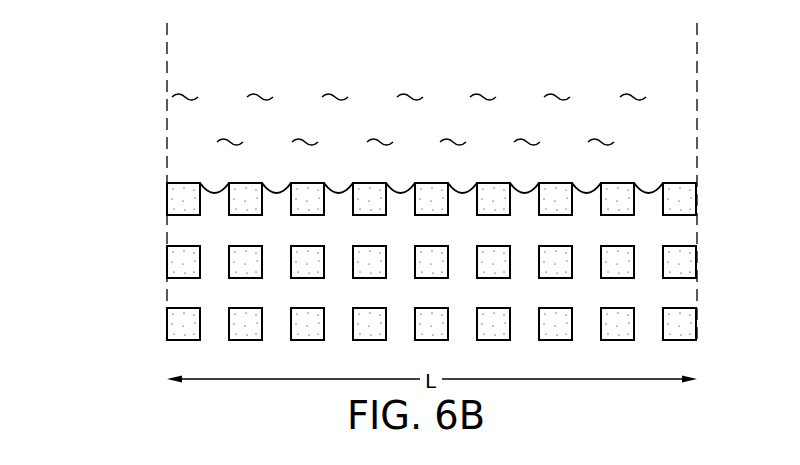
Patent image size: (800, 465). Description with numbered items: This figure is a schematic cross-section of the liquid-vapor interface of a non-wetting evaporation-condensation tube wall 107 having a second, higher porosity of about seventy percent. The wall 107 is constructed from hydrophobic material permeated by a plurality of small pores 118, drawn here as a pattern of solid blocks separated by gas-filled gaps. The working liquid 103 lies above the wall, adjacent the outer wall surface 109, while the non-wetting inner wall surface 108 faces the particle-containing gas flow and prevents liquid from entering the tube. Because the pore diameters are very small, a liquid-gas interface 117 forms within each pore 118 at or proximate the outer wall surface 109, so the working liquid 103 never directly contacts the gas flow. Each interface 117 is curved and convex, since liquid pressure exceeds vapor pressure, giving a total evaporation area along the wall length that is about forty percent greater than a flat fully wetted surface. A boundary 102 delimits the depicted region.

The channel wall 102 is at (690, 97).
The working liquid 103 is at (635, 94).
The evaporation-condensation tube wall 107 is at (401, 252).
The inner wall surface 108 is at (687, 341).
The outer wall surface 109 is at (685, 182).
The liquid-gas interface 117 is at (648, 192).
The pores 118 is at (648, 320).